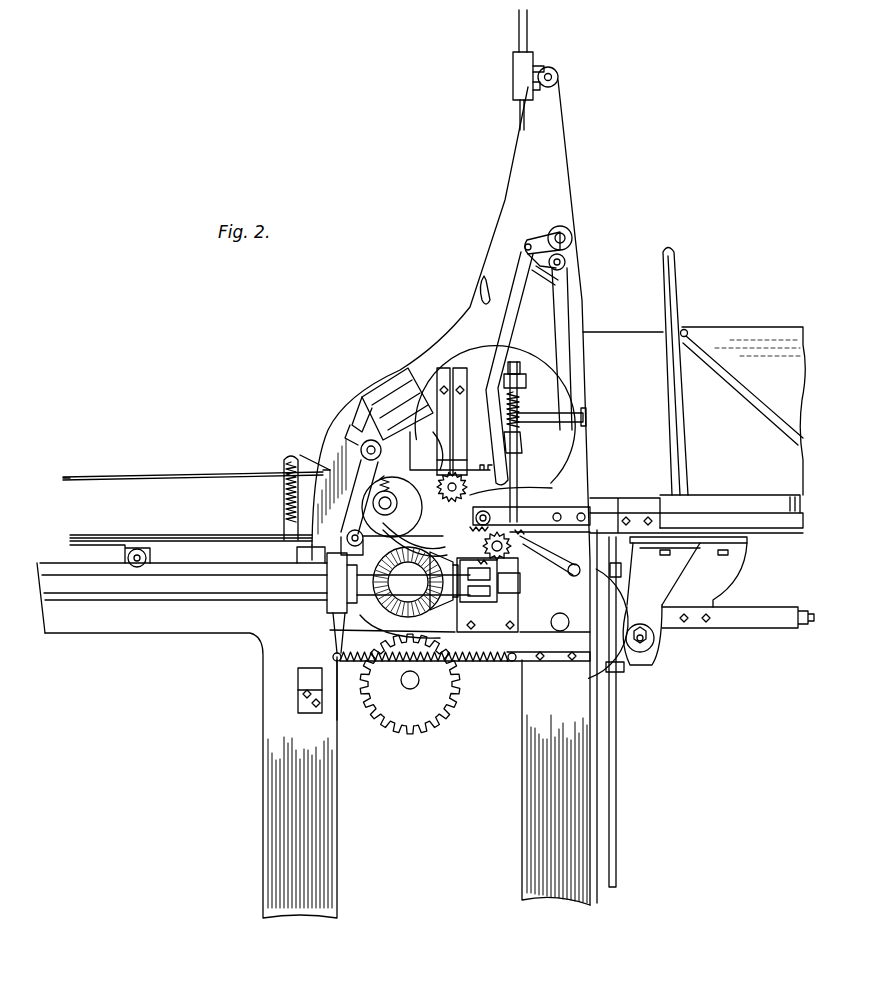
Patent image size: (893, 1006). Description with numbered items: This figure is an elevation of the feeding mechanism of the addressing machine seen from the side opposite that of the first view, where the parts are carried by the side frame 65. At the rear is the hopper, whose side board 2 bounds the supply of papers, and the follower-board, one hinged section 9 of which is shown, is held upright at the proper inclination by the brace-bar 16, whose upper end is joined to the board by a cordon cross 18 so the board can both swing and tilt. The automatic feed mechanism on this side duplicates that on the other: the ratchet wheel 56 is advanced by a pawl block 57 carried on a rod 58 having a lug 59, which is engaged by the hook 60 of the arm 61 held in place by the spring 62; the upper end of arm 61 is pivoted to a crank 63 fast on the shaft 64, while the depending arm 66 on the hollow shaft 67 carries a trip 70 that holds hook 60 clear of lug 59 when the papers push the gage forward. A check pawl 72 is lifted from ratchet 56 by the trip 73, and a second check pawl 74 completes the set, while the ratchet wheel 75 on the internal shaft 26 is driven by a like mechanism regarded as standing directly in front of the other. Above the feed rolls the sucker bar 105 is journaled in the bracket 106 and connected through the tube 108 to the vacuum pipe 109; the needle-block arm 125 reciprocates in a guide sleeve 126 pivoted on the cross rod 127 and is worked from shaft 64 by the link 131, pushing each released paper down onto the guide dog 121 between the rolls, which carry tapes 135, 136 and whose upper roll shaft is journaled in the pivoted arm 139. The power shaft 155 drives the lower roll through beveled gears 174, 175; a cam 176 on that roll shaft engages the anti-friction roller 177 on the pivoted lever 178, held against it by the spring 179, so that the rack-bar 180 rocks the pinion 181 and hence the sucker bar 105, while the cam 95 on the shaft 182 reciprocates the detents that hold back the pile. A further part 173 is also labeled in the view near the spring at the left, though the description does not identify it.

The side board 2 is at (742, 335).
The follower-board section 9 is at (680, 298).
The brace-bar 16 is at (750, 395).
The cordon cross 18 is at (687, 328).
The internal shaft 26 is at (505, 605).
The ratchet wheel 56 is at (500, 566).
The pawl block 57 is at (520, 588).
The rod 58 is at (522, 486).
The lug 59 is at (522, 442).
The hook 60 is at (517, 480).
The arm 61 is at (498, 337).
The spring 62 is at (481, 288).
The crank 63 is at (536, 236).
The shaft 64 is at (572, 236).
The side frame 65 is at (563, 190).
The depending arm 66 is at (566, 322).
The shaft 67 is at (566, 258).
The trip 70 is at (548, 415).
The check pawl 72 is at (560, 522).
The trip 73 is at (540, 560).
The check pawl 74 is at (442, 530).
The ratchet wheel 75 is at (490, 513).
The cam 95 is at (622, 672).
The sucker bar 105 is at (389, 406).
The bracket 106 is at (352, 494).
The tube 108 is at (624, 534).
The pipe 109 is at (616, 785).
The guide dog 121 is at (440, 672).
The arm 125 is at (527, 42).
The guide sleeve 126 is at (513, 90).
The cross rod 127 is at (558, 75).
The link 131 is at (290, 518).
The tape 135 is at (196, 478).
The tape 136 is at (80, 545).
The pivoted arm 139 is at (325, 590).
The power shaft 155 is at (192, 590).
The spring 173 is at (288, 486).
The beveled gear 174 is at (398, 660).
The beveled gear 175 is at (415, 610).
The cam 176 is at (315, 548).
The anti-friction roller 177 is at (327, 570).
The pivoted lever 178 is at (335, 618).
The spring 179 is at (490, 680).
The rack-bar 180 is at (440, 470).
The pinion 181 is at (362, 502).
The shaft 182 is at (560, 632).